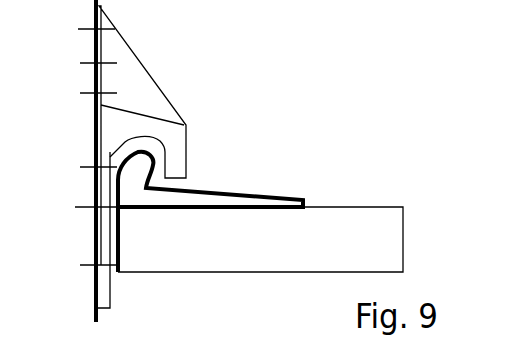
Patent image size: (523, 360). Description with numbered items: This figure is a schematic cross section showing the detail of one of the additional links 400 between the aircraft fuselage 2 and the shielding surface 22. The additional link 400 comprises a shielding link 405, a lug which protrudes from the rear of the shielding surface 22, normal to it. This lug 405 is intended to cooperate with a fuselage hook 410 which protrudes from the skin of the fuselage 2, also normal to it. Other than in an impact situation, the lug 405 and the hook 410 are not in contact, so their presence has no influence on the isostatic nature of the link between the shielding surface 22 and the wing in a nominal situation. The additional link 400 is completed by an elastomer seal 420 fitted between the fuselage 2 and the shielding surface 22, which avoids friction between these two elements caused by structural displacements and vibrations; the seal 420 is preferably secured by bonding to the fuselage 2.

The additional link 400 is at (151, 165).
The fuselage 2 is at (108, 123).
The shielding link 405 is at (130, 177).
The fuselage hook 410 is at (185, 140).
The elastomer seal 420 is at (113, 272).
The shielding surface 22 is at (237, 258).